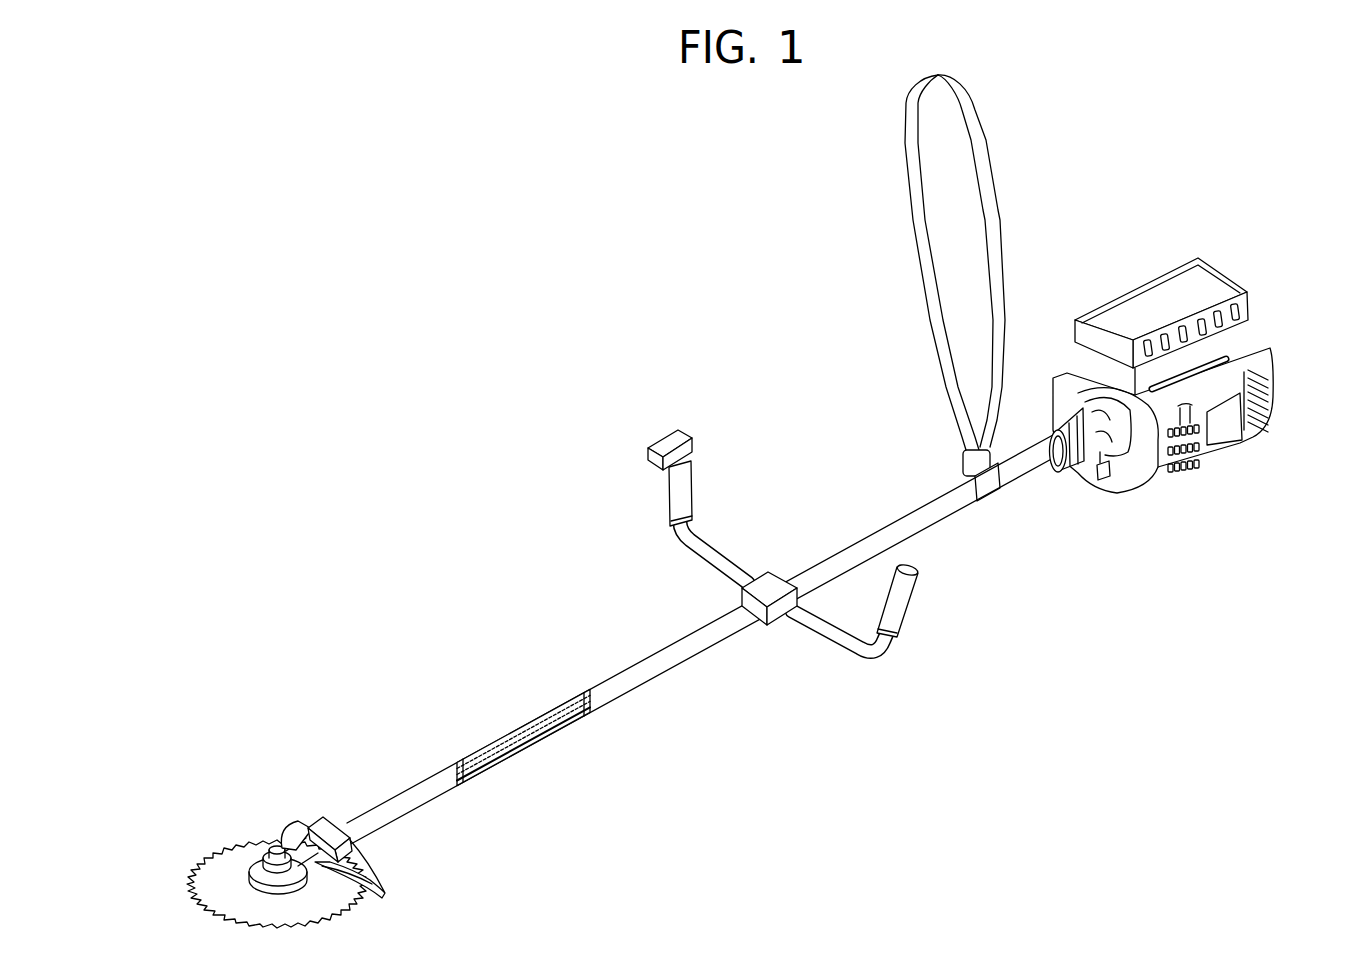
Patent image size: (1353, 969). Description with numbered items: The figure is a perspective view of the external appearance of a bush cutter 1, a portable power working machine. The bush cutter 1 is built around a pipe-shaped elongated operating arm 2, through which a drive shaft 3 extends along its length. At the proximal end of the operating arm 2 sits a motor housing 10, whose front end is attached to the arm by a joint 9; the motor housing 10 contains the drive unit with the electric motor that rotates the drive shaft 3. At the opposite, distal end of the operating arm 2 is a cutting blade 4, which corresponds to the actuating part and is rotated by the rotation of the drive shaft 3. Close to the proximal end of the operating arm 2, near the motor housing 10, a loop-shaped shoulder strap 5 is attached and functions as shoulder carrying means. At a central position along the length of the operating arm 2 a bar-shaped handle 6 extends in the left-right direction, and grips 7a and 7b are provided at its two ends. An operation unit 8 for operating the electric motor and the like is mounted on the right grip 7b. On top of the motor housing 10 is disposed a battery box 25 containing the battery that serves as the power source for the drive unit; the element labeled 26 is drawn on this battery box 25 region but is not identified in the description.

The bush cutter 1 is at (545, 362).
The operating arm 2 is at (626, 664).
The drive shaft 3 is at (507, 747).
The cutting blade 4 is at (218, 868).
The shoulder strap 5 is at (903, 178).
The handle 6 is at (790, 564).
The grip 7a is at (907, 606).
The right grip 7b is at (663, 471).
The operation unit 8 is at (652, 455).
The joint 9 is at (1078, 458).
The motor housing 10 is at (1161, 374).
The battery box 25 is at (1187, 265).
The cover lid 26 is at (1225, 270).